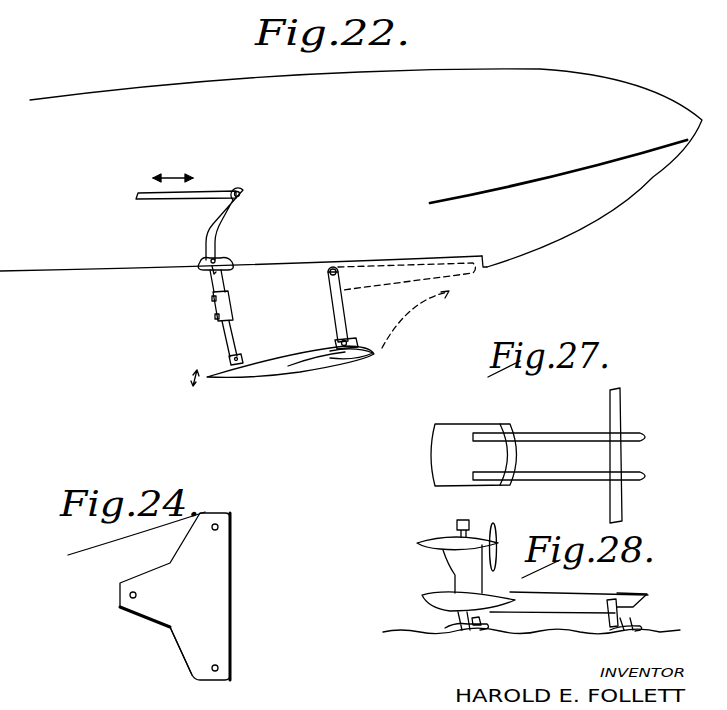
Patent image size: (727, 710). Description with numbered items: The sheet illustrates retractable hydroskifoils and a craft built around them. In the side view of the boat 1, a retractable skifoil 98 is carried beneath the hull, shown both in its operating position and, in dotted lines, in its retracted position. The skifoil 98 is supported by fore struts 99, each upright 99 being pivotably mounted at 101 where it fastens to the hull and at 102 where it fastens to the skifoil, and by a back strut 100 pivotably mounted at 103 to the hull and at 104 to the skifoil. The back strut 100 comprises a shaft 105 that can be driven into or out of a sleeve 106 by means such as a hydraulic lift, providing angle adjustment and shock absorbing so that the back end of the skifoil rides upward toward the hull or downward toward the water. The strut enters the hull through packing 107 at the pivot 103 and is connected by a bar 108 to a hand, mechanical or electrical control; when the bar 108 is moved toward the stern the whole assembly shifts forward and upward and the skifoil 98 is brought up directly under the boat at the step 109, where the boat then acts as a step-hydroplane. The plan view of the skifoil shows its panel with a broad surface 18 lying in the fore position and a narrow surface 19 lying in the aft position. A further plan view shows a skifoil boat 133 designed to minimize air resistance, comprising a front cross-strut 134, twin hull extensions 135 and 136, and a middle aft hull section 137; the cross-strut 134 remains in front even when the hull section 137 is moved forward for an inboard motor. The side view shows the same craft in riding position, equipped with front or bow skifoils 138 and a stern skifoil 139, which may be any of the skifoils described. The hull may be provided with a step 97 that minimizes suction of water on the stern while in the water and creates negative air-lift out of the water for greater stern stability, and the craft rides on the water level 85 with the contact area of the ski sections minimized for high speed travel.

In FIG. 22, the boat 1 is at (443, 64).
In FIG. 24, the broad surface 18 is at (222, 590).
In FIG. 24, the narrow surface 19 is at (130, 610).
In FIG. 28, the water level 85 is at (530, 634).
In FIG. 28, the step 97 is at (425, 606).
In FIG. 22, the skifoil 98 is at (272, 371).
In FIG. 24, the skifoil 98 is at (170, 631).
In FIG. 22, the struts (uprights) 99 is at (340, 312).
In FIG. 24, the struts (uprights) 99 is at (218, 527).
In FIG. 22, the back strut 100 is at (224, 340).
In FIG. 24, the back strut 100 is at (133, 591).
In FIG. 22, the pivot at hull fastening 101 is at (330, 273).
In FIG. 22, the pivot at skifoil fastening 102 is at (353, 340).
In FIG. 22, the hull pivot of back strut 103 is at (212, 271).
In FIG. 22, the skifoil pivot of back strut 104 is at (242, 362).
In FIG. 22, the shaft 105 is at (237, 343).
In FIG. 22, the sleeve 106 is at (227, 300).
In FIG. 22, the packing 107 is at (224, 254).
In FIG. 22, the bar 108 is at (203, 192).
In FIG. 22, the step 109 is at (482, 254).
In FIG. 27, the skifoil boat 133 is at (521, 429).
In FIG. 27, the front cross-strut 134 is at (620, 503).
In FIG. 28, the front cross-strut 134 is at (617, 602).
In FIG. 27, the hull extension 135 is at (568, 431).
In FIG. 27, the hull extension 136 is at (575, 472).
In FIG. 28, the hull extension 136 is at (573, 595).
In FIG. 27, the middle aft hull section 137 is at (464, 428).
In FIG. 28, the middle aft hull section 137 is at (448, 592).
In FIG. 28, the front or bow skifoils 138 is at (634, 598).
In FIG. 28, the stern skifoil 139 is at (461, 630).